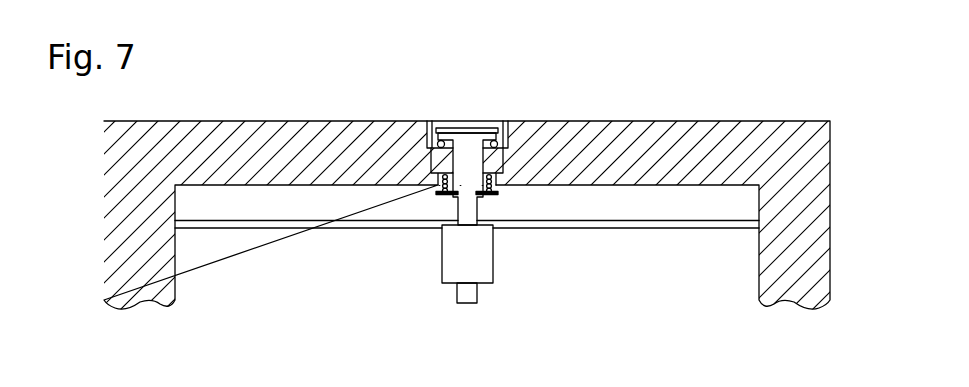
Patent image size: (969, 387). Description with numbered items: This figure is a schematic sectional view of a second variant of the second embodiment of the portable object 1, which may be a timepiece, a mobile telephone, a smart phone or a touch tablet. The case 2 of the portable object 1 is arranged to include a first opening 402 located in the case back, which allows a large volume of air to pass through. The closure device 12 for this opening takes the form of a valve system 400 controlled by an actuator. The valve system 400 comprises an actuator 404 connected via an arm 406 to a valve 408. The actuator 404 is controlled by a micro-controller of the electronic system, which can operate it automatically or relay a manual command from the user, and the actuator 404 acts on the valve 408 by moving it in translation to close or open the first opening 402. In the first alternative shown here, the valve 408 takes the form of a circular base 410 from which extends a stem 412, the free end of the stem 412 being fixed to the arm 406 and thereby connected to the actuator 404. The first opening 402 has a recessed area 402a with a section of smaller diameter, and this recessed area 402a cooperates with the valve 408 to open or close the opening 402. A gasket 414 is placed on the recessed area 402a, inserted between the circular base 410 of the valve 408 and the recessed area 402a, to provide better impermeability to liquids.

The portable object 1 is at (830, 72).
The case 2 is at (754, 143).
The closure device 12 is at (564, 120).
The valve system 400 is at (422, 293).
The first opening 402 is at (500, 127).
The recessed area 402a is at (450, 163).
The actuator 404 is at (480, 265).
The arm 406 is at (480, 200).
The valve 408 is at (476, 120).
The circular base 410 is at (437, 134).
The stem 412 is at (463, 206).
The gasket 414 is at (437, 140).